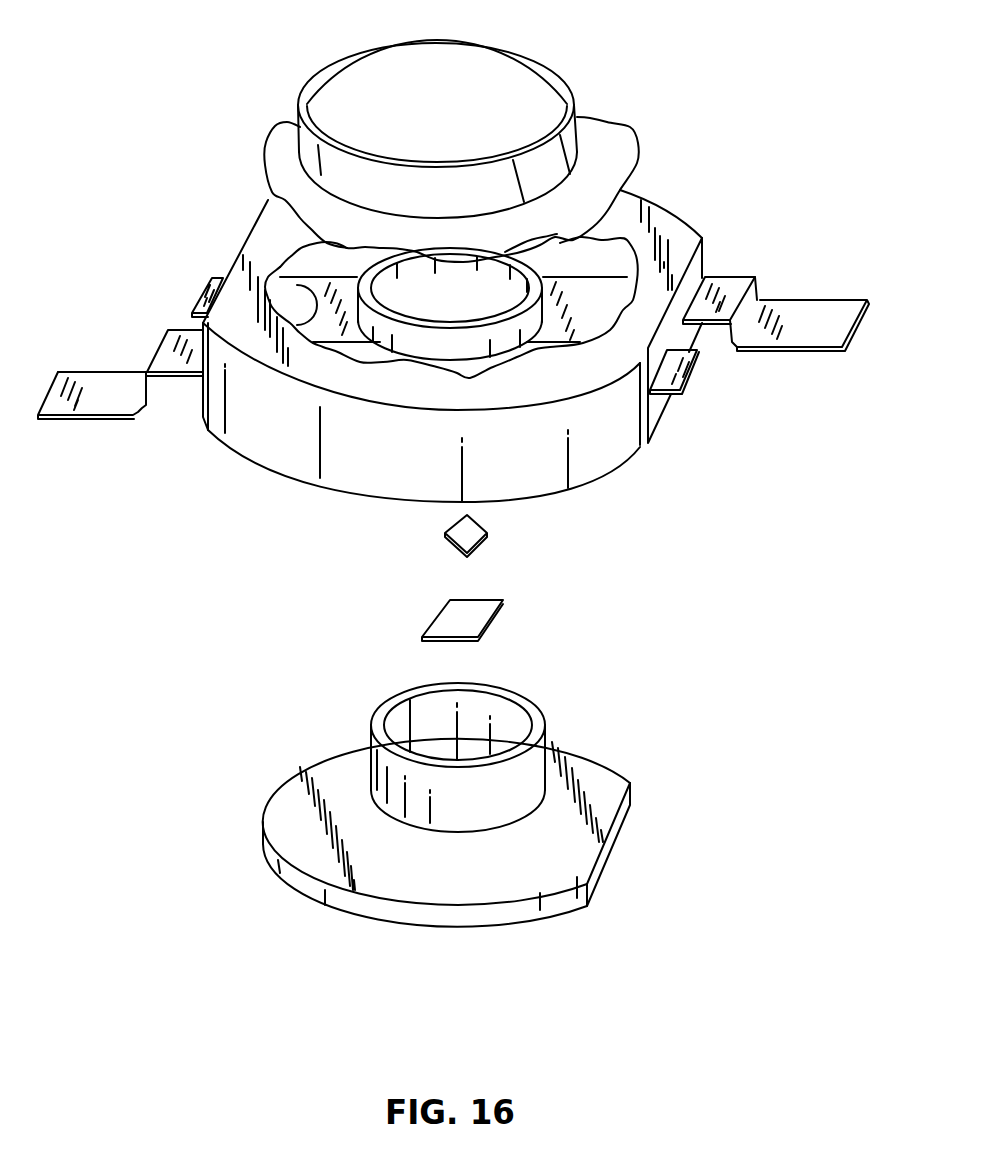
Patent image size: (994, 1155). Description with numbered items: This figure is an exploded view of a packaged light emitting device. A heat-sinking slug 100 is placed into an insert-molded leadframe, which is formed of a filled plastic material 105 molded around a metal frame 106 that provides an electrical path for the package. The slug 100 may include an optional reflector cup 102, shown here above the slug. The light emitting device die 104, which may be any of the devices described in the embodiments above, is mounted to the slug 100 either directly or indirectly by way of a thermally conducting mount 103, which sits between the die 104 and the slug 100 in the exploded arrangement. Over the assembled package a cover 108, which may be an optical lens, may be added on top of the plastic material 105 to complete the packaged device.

The heat-sinking slug 100 is at (620, 832).
The reflector cup 102 is at (531, 704).
The thermally conducting mount 103 is at (503, 614).
The light emitting device die 104 is at (484, 524).
The filled plastic material 105 is at (673, 211).
The metal frame 106 is at (800, 351).
The cover 108 is at (535, 65).